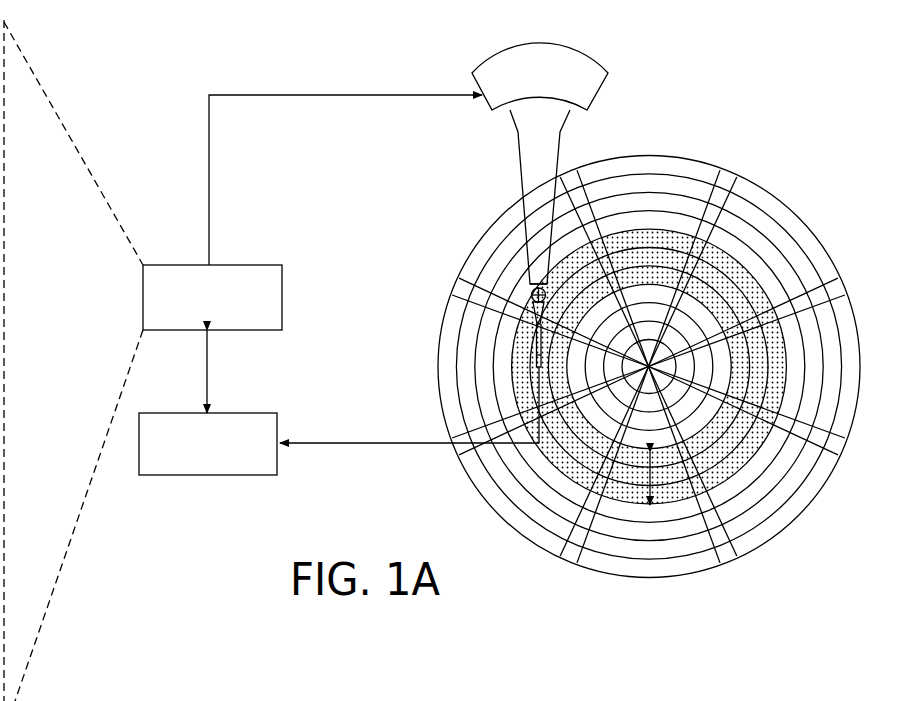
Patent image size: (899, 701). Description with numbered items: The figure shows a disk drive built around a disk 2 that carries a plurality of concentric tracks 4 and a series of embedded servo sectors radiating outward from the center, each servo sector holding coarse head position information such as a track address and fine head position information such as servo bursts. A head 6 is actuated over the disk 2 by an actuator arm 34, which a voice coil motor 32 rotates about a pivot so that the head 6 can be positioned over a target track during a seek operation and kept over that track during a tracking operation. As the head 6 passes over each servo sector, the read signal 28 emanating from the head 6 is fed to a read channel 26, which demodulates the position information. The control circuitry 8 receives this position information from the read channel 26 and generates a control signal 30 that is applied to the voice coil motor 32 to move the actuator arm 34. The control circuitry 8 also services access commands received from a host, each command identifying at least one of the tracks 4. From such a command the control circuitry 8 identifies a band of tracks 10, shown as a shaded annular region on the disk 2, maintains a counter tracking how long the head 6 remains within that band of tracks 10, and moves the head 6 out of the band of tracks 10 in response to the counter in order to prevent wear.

The disk 2 is at (798, 196).
The tracks 4 is at (648, 180).
The head 6 is at (533, 370).
The control circuitry 8 is at (250, 266).
The band of tracks 10 is at (660, 482).
The read channel 26 is at (201, 478).
The read signal 28 is at (367, 446).
The control signal 30 is at (206, 170).
The voice coil motor 32 is at (486, 108).
The actuator arm 34 is at (518, 184).